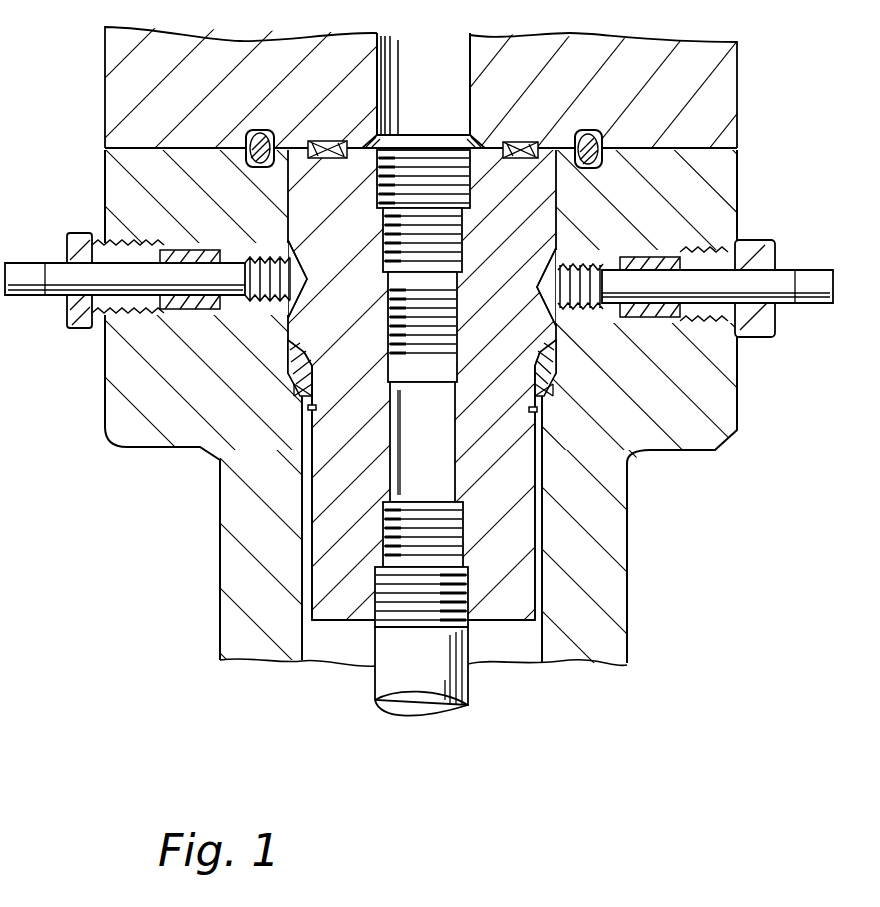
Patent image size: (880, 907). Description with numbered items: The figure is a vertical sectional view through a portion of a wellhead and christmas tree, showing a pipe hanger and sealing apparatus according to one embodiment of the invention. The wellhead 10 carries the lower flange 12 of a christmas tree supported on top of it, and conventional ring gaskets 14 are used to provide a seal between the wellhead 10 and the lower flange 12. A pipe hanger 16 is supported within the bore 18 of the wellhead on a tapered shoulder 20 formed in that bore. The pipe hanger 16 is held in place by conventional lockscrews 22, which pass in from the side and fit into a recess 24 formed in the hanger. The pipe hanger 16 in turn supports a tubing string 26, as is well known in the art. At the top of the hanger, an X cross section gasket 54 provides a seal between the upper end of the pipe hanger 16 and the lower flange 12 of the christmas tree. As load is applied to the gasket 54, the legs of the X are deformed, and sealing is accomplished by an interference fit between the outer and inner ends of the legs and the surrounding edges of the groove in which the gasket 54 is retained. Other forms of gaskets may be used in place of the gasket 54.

The wellhead 10 is at (715, 401).
The lower flange of christmas tree 12 is at (718, 92).
The ring gaskets 14 is at (257, 128).
The pipe hanger 16 is at (527, 197).
The bore 18 is at (542, 638).
The tapered shoulder 20 is at (533, 395).
The lockscrews 22 is at (42, 260).
The recess 24 is at (563, 241).
The tubing string 26 is at (440, 690).
The X cross section gasket 54 is at (512, 141).